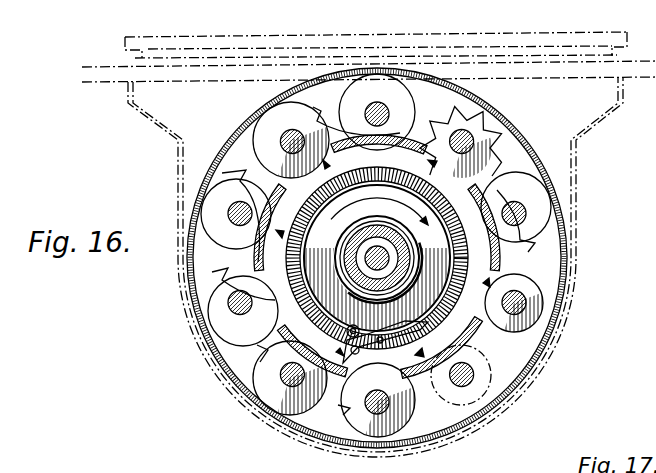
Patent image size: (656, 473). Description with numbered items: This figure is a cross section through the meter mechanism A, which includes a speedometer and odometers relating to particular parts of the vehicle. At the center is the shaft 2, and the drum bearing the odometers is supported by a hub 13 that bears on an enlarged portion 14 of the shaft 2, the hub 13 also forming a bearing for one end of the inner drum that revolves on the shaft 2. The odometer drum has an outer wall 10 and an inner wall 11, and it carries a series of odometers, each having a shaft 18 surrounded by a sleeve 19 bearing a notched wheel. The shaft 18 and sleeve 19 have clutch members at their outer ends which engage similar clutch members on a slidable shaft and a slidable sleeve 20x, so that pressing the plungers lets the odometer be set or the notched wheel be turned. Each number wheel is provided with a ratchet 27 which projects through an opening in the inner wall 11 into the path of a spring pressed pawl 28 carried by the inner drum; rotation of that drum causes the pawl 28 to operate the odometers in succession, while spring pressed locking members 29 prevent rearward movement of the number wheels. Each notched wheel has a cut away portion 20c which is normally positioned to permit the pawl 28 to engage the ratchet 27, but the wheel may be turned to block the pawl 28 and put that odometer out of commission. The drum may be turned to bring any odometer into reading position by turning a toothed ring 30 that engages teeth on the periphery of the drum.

The meter mechanism A is at (477, 35).
The ring 30 is at (251, 41).
The outer wall 10 is at (527, 148).
The inner wall 11 is at (279, 179).
The shaft 2 is at (388, 251).
The hub 13 is at (343, 266).
The enlarged portion 14 is at (362, 273).
The slidable sleeve 20x is at (293, 246).
The cut away portion 20c is at (308, 452).
The shaft 18 is at (286, 137).
The sleeve 19 is at (281, 148).
The ratchet 27 is at (485, 127).
The pawl 28 is at (367, 348).
The locking member 29 is at (316, 122).